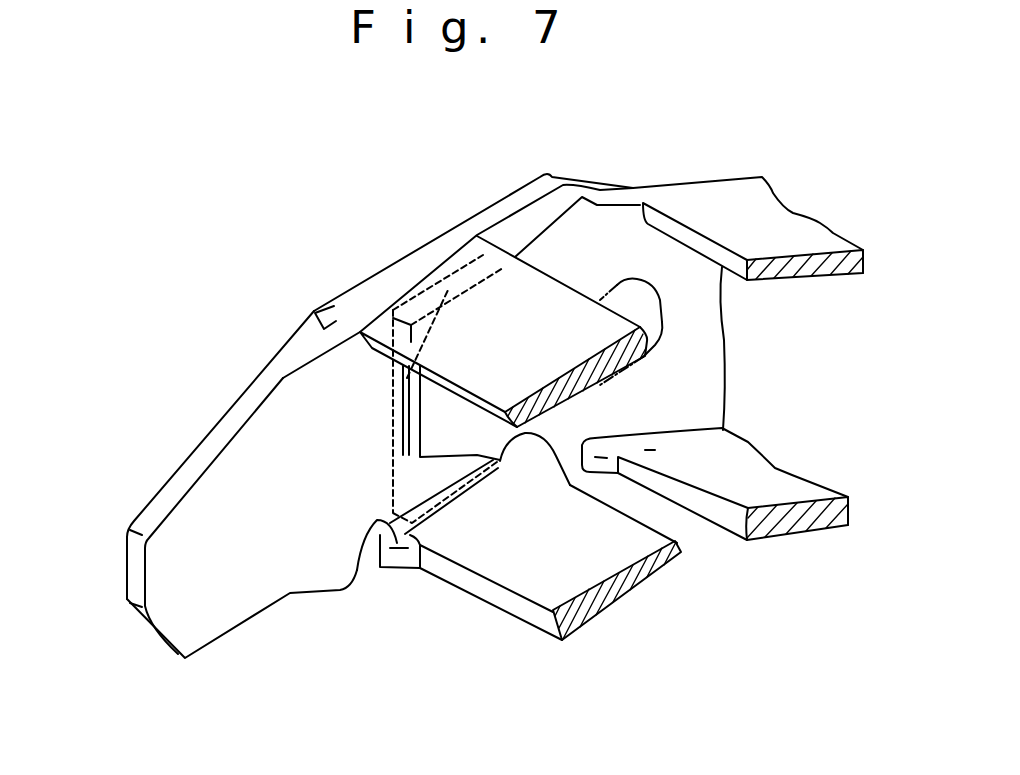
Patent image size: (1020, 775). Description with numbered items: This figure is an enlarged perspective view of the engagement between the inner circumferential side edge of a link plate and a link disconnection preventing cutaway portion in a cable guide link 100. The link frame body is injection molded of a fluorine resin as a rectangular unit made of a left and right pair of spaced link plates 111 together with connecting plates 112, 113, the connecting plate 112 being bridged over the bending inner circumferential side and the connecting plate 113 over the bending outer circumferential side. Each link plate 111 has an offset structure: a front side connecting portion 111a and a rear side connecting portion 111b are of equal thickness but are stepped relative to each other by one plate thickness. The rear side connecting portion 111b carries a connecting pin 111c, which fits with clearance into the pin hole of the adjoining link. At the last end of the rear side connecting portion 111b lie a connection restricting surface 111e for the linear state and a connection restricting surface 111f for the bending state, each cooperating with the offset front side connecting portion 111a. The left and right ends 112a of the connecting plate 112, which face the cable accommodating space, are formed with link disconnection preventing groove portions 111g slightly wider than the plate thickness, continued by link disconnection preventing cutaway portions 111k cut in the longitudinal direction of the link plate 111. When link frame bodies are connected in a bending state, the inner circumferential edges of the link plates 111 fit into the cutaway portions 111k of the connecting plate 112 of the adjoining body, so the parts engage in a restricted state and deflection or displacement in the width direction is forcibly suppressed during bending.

The connector contact assembly 100 is at (307, 260).
The link plate 111 is at (153, 268).
The front side connecting portion 111a is at (334, 306).
The rear side connecting portion 111b is at (307, 400).
The connecting pin 111c is at (662, 325).
The connection restricting surface in a linear state 111e is at (133, 572).
The connection restricting surface in a bending state 111f is at (177, 473).
The link disconnection preventing groove portion 111g is at (447, 487).
The link disconnection preventing cutaway portion 111k is at (570, 485).
The connecting plate 112 is at (533, 563).
The left and right ends of the connecting portion 112a is at (357, 570).
The connecting plate 113 is at (510, 320).